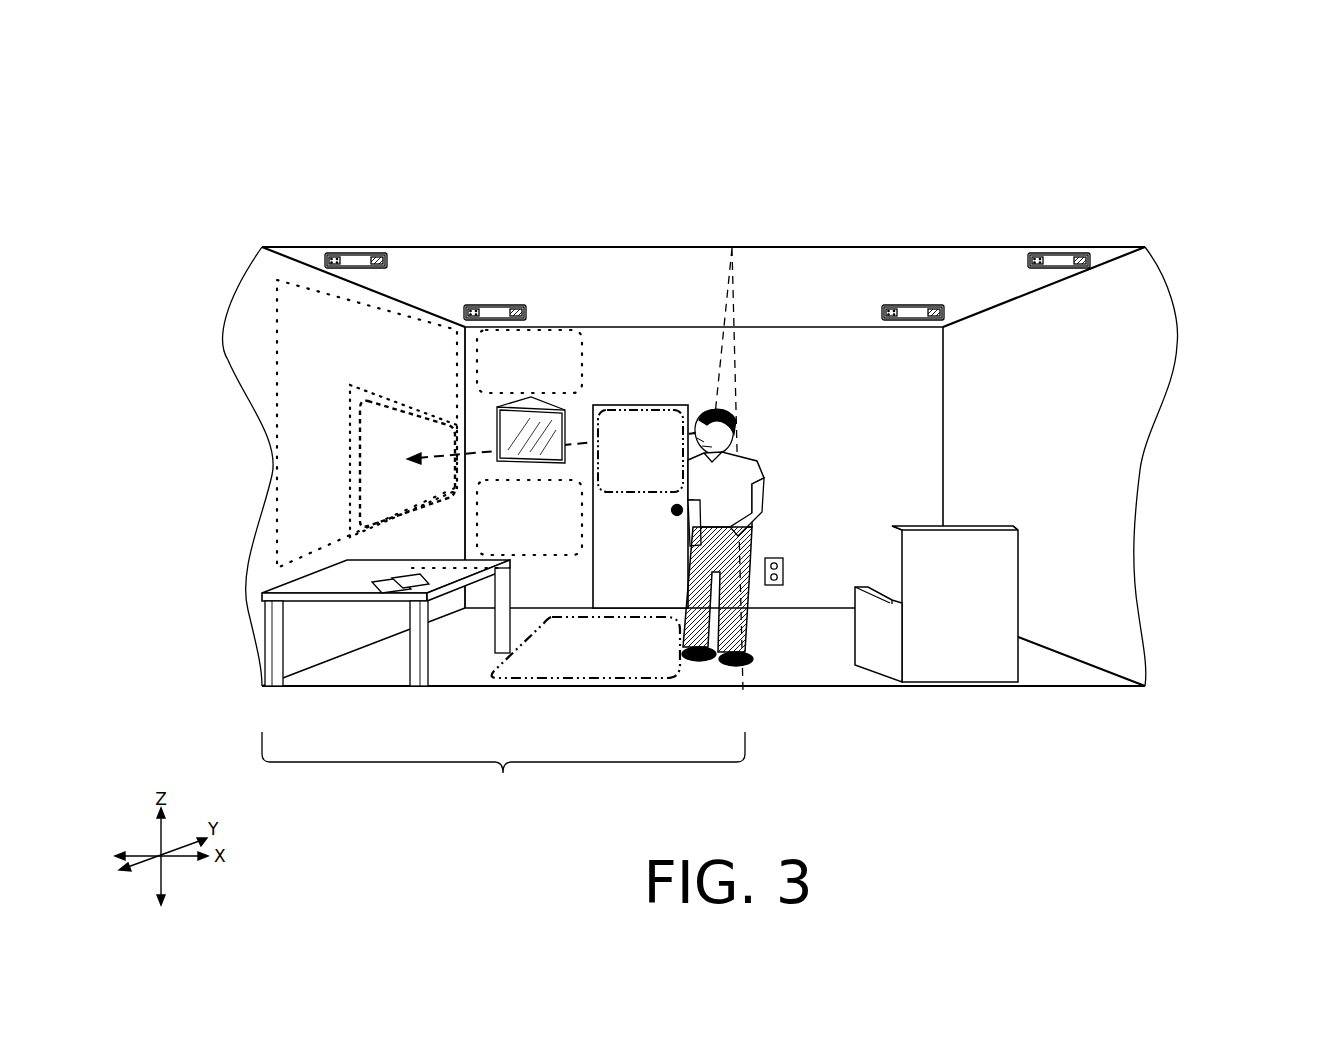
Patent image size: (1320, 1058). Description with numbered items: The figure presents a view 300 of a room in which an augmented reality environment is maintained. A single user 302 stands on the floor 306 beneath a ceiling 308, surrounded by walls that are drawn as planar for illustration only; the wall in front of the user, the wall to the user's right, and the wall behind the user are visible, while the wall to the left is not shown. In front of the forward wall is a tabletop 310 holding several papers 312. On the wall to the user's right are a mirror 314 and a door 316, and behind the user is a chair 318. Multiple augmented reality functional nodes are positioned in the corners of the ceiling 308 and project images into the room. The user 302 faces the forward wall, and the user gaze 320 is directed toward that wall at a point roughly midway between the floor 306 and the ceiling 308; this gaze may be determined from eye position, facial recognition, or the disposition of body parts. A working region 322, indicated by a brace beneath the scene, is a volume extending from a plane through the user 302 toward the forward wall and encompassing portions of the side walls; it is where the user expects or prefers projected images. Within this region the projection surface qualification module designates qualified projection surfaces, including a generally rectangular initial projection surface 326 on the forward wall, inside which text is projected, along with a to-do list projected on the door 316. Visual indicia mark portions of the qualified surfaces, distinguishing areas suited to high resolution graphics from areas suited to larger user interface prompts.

The view 300 is at (1236, 169).
The user 302 is at (705, 400).
The floor 306 is at (1058, 670).
The ceiling 308 is at (1013, 278).
The tabletop 310 is at (347, 582).
The papers 312 is at (390, 582).
The mirror 314 is at (512, 405).
The door 316 is at (645, 405).
The chair 318 is at (943, 638).
The user gaze 320 is at (427, 458).
The working region 322 is at (503, 779).
The initial projection surface 326 is at (387, 432).